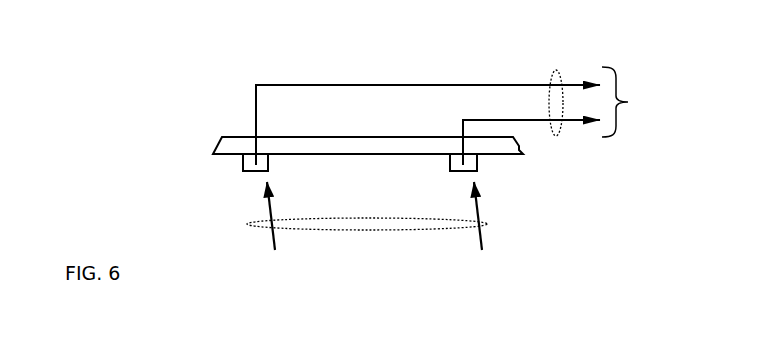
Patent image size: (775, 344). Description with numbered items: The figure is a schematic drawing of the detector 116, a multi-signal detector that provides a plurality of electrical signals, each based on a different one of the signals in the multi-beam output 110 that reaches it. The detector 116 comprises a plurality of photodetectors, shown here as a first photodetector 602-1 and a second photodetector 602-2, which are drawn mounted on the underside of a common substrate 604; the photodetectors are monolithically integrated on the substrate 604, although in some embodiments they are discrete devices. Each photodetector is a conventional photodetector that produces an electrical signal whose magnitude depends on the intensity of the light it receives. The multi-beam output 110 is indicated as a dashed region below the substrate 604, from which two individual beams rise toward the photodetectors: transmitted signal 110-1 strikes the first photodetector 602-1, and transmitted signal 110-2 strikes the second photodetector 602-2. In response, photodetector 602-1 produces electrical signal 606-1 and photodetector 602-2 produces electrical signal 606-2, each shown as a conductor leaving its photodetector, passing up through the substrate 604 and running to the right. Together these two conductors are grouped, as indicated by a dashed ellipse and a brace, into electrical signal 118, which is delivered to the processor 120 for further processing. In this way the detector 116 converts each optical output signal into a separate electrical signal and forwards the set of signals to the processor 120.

The detector 116 is at (124, 77).
The substrate 604 is at (216, 147).
The photodetector 602-1 is at (243, 165).
The photodetector 602-2 is at (477, 165).
The electrical signal 606-1 is at (255, 101).
The electrical signal 606-2 is at (462, 128).
The electrical signal 118 is at (551, 75).
The processor 120 is at (664, 103).
The transmitted multi-beam output 110 is at (490, 223).
The transmitted signal 110-1 is at (270, 242).
The transmitted signal 110-2 is at (478, 242).